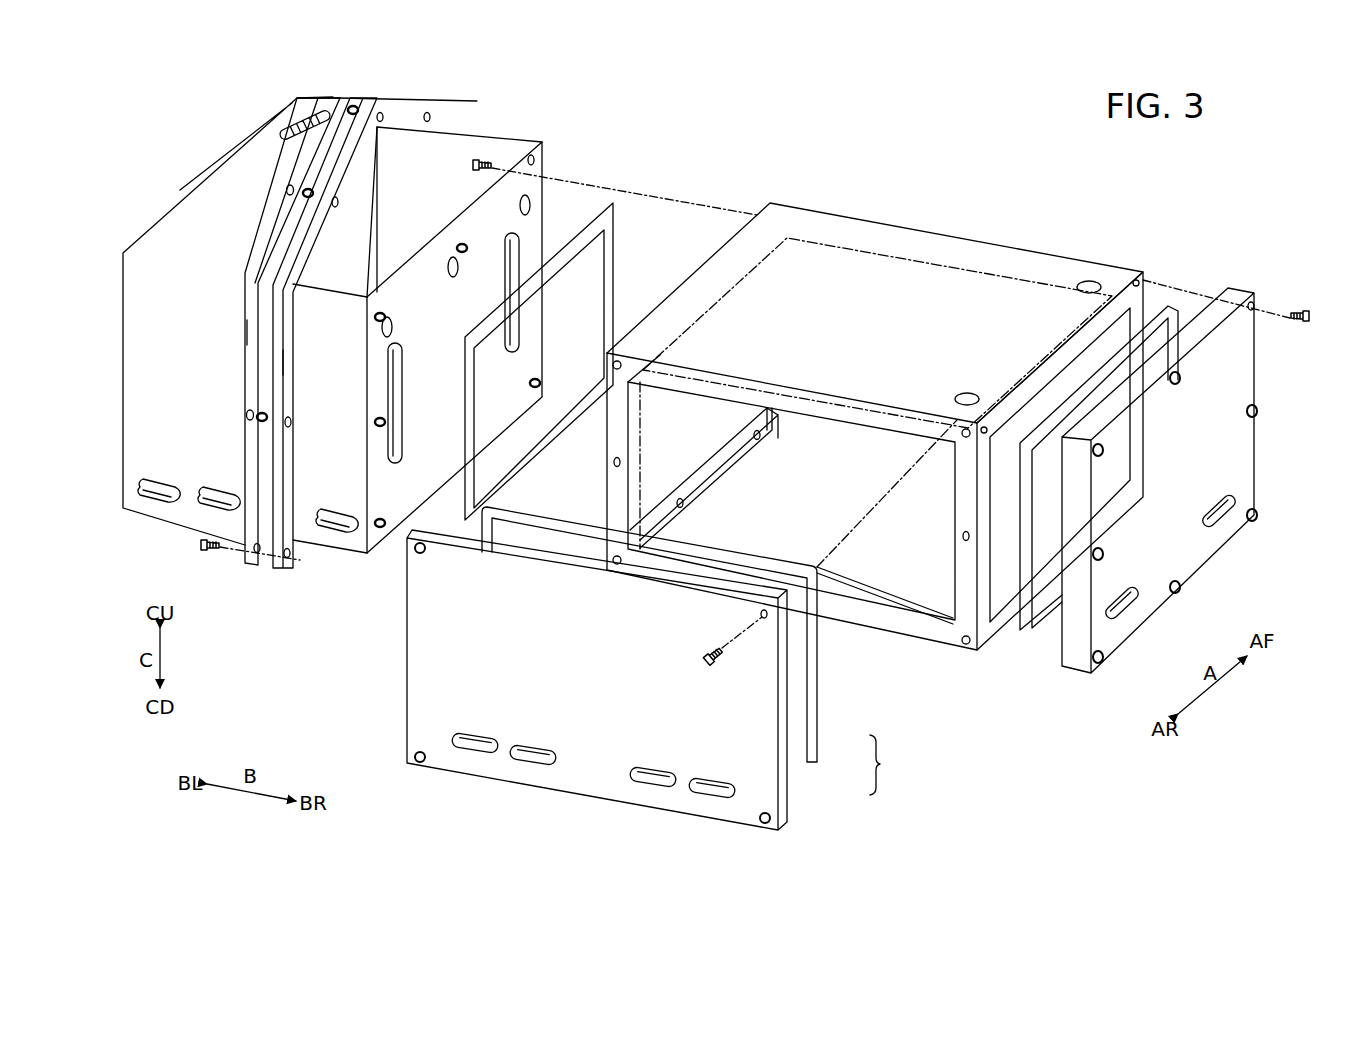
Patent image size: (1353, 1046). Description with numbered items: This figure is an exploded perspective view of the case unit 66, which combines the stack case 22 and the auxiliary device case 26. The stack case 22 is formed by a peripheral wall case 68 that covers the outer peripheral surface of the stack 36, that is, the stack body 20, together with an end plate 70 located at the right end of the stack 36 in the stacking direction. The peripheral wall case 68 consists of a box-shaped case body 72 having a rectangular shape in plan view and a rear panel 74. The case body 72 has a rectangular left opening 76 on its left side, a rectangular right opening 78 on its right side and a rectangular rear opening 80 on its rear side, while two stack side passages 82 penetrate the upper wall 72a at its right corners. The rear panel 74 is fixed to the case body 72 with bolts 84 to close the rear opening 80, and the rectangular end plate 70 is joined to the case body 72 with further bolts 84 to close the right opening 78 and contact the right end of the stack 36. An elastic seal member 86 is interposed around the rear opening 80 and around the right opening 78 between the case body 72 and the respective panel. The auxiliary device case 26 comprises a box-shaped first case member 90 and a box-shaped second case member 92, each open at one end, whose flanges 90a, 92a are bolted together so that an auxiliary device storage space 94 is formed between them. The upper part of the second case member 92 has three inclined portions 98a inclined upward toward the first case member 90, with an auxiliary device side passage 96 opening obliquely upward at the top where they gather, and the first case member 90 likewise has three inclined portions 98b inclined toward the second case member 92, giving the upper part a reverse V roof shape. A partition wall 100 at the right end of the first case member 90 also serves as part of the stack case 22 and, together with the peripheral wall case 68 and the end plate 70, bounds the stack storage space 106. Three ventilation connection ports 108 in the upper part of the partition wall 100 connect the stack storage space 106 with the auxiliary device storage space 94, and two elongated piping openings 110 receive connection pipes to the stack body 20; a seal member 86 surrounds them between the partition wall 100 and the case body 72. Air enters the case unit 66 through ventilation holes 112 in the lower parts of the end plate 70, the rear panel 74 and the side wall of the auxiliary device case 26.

The stack case 22 is at (875, 445).
The auxiliary device case 26 is at (228, 303).
The stack 36 is at (877, 368).
The stack body 20 is at (1014, 274).
The case unit 66 is at (746, 134).
The peripheral wall case 68 is at (890, 765).
The end plate 70 is at (1240, 381).
The case body 72 is at (847, 622).
The upper wall 72a is at (955, 245).
The rear panel 74 is at (658, 680).
The left opening 76 is at (678, 490).
The right opening 78 is at (988, 490).
The rear opening 80 is at (803, 427).
The stack side passage 82 is at (966, 390).
The bolt 84 is at (472, 165).
The seal member 86 is at (617, 240).
The first case member 90 is at (343, 353).
The flange 90a is at (285, 360).
The second case member 92 is at (251, 335).
The flange 92a is at (262, 333).
The auxiliary device storage space 94 is at (451, 346).
The auxiliary device side passage 96 is at (338, 102).
The inclined portion 98a is at (253, 207).
The inclined portion 98b is at (363, 178).
The partition wall 100 is at (540, 312).
The stack storage space 106 is at (890, 590).
The ventilation connection port 108 is at (392, 322).
The piping opening 110 is at (404, 375).
The ventilation hole 112 is at (155, 482).